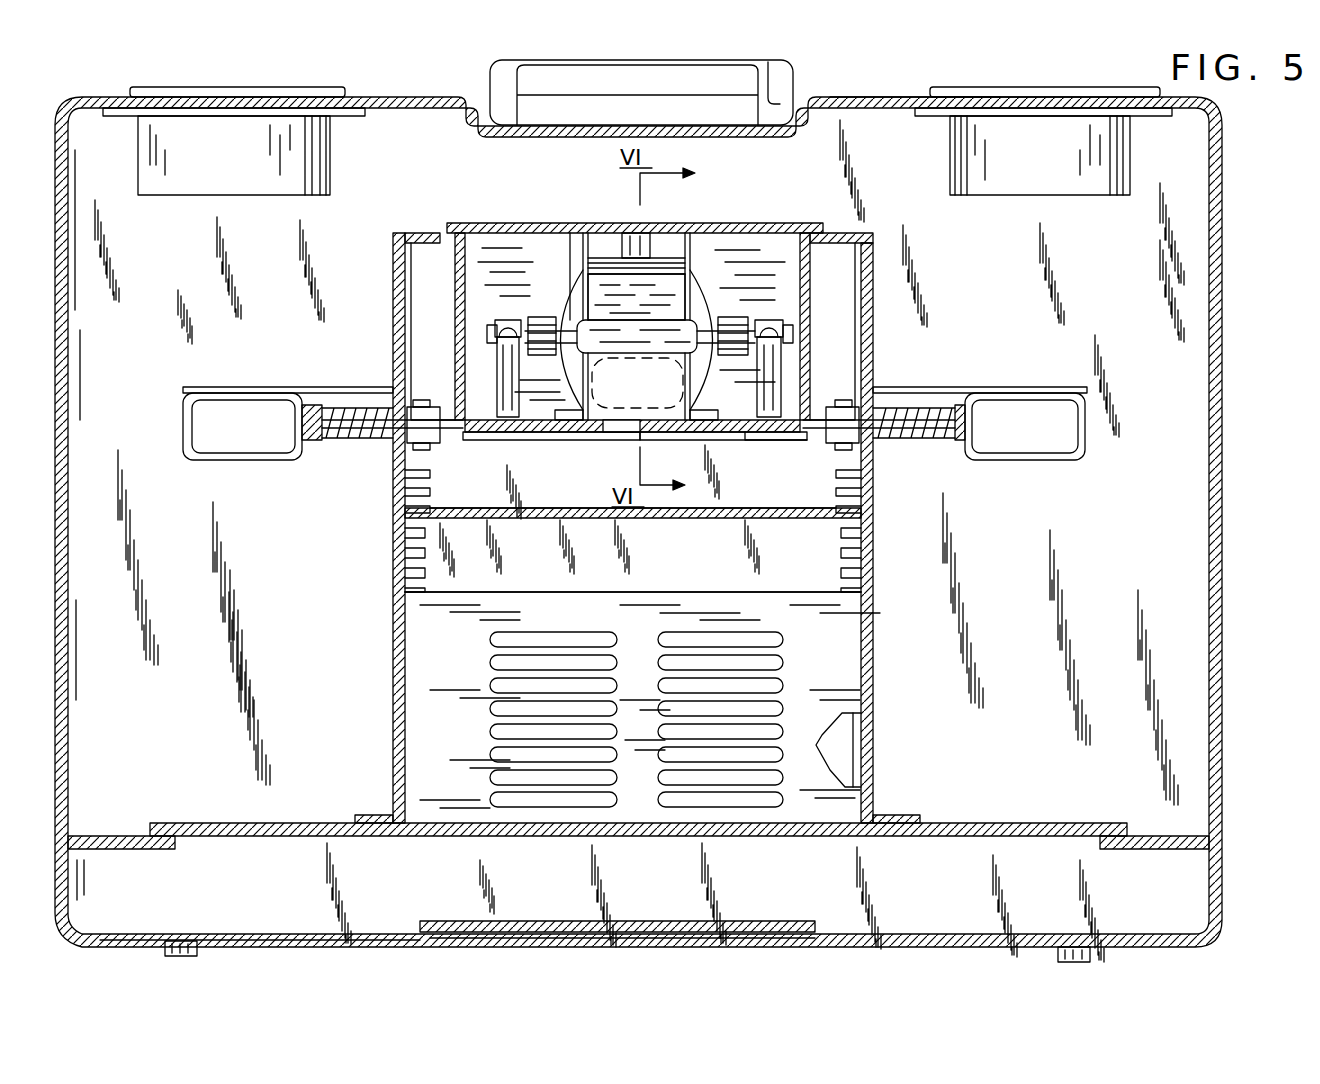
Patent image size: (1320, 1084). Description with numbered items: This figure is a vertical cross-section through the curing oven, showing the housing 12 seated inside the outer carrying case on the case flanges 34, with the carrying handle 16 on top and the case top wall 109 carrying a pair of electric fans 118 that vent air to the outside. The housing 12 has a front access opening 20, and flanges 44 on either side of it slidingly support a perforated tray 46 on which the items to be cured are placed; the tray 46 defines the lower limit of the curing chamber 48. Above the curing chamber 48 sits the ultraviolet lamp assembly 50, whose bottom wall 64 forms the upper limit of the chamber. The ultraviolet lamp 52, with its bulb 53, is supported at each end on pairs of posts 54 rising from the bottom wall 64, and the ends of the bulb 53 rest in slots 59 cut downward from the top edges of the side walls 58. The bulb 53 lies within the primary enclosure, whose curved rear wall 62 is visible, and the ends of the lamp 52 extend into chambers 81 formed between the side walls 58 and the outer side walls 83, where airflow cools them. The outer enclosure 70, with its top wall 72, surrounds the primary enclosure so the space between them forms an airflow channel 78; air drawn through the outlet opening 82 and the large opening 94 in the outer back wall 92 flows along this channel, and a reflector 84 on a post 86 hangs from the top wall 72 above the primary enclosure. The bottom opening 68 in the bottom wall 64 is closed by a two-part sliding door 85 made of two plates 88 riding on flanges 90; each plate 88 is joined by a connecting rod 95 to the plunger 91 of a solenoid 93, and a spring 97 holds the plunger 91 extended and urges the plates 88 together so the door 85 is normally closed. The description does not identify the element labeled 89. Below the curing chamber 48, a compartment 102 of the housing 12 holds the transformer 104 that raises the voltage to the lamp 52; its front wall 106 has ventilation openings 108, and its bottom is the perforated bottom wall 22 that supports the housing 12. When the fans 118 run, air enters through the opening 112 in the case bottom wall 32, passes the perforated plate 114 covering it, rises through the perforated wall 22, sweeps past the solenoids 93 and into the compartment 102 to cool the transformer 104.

The housing 12 is at (880, 673).
The carrying handle 16 is at (760, 80).
The access opening 20 is at (862, 636).
The perforated bottom wall 22 is at (323, 836).
The bottom wall 32 is at (410, 938).
The flanges 34 is at (158, 842).
The flanges 44 is at (430, 503).
The perforated tray 46 is at (738, 518).
The curing chamber 48 is at (562, 492).
The ultraviolet lamp assembly 50 is at (776, 246).
The ultraviolet lamp 52 is at (565, 312).
The bulb 53 is at (682, 327).
The posts 54 is at (500, 357).
The side walls 58 is at (690, 387).
The slots 59 is at (683, 262).
The curved rear wall 62 is at (672, 300).
The bottom wall 64 is at (632, 446).
The bottom opening 68 is at (612, 433).
The outer enclosure 70 is at (575, 216).
The top wall 72 is at (484, 224).
The airflow channel 78 is at (613, 268).
The chambers 81 is at (482, 273).
The outlet opening 82 is at (708, 393).
The outer side walls 83 is at (467, 264).
The reflector 84 is at (657, 260).
The two-part sliding door 85 is at (570, 440).
The post 86 is at (647, 234).
The plates 88 is at (636, 438).
The latch guide plate 89 is at (353, 387).
The flanges 90 is at (787, 438).
The plunger 91 is at (333, 415).
The outer back wall 92 is at (500, 250).
The solenoid 93 is at (208, 410).
The large opening 94 is at (572, 260).
The connecting rod 95 is at (452, 422).
The spring 97 is at (370, 445).
The compartment 102 is at (863, 731).
The transformer 104 is at (843, 751).
The front wall of the compartment 106 is at (413, 725).
The ventilation openings 108 is at (492, 683).
The top wall 109 is at (873, 100).
The opening 112 is at (618, 940).
The perforated plate 114 is at (790, 925).
The electric fan 118 is at (322, 155).